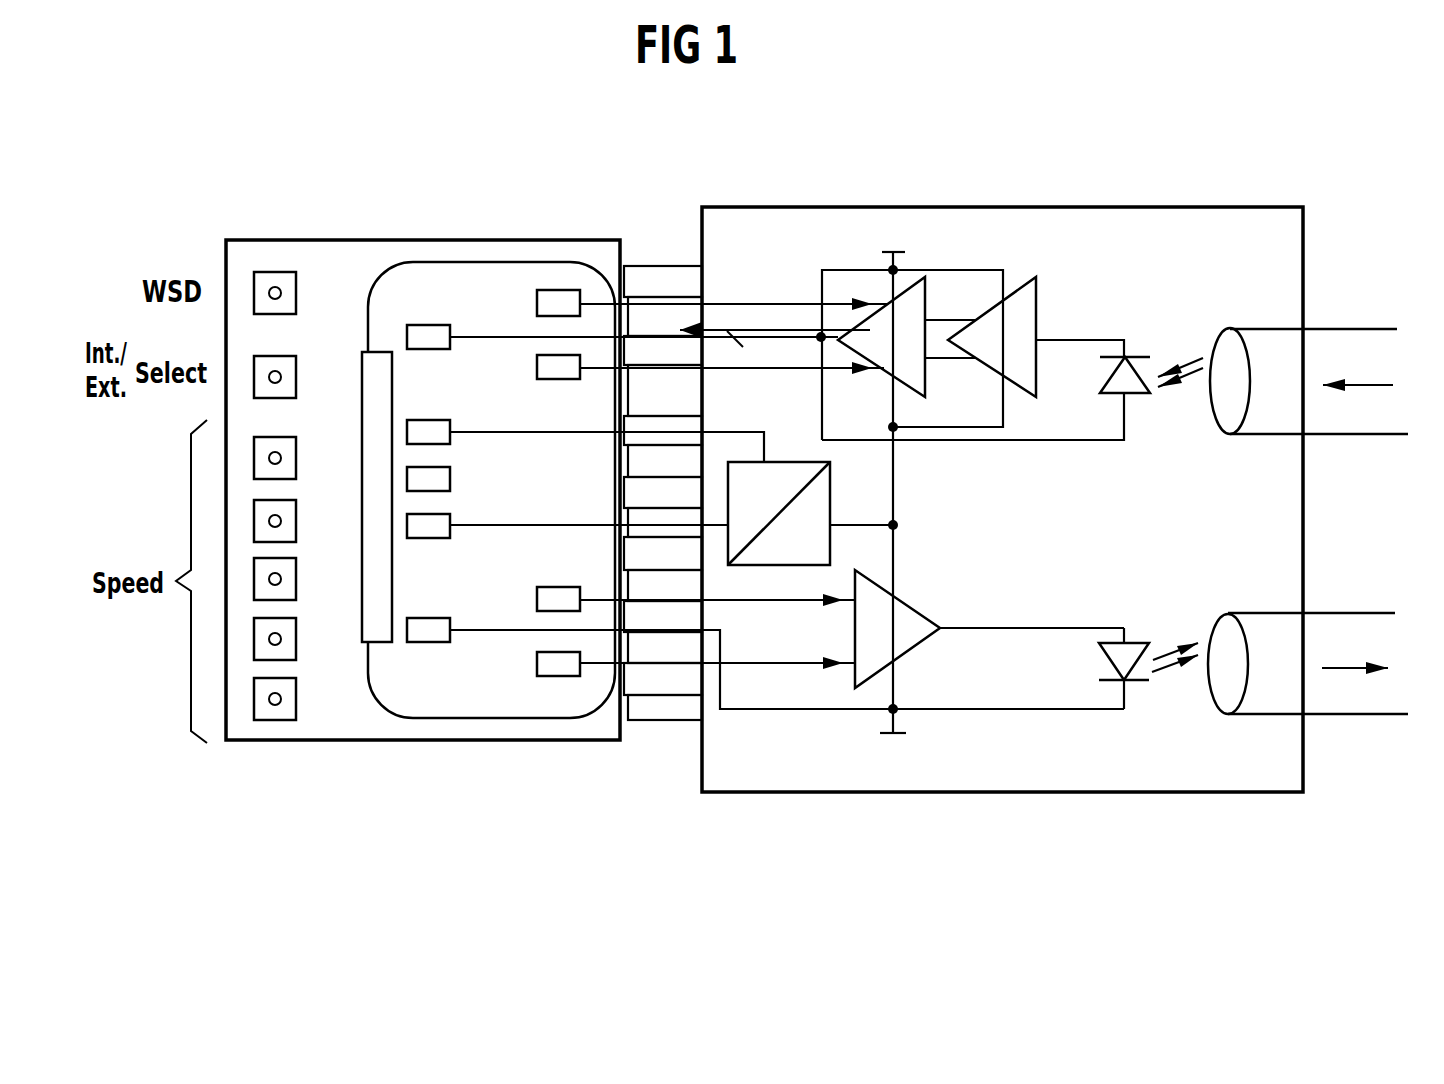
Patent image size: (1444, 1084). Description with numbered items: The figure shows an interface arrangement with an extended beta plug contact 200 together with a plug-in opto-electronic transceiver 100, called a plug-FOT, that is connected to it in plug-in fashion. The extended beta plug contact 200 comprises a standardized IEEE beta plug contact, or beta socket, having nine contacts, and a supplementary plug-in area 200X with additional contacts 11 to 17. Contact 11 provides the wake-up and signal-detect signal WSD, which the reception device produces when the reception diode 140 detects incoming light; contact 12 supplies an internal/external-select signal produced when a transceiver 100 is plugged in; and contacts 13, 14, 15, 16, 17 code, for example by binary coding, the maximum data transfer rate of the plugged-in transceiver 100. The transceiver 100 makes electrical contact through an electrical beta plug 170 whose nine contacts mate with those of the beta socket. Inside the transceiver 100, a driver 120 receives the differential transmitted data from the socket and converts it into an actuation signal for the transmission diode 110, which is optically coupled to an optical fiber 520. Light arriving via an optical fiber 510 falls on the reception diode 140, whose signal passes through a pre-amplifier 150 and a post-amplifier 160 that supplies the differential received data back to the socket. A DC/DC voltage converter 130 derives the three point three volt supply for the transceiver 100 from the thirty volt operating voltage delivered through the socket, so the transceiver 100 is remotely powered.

The contact 11 is at (288, 305).
The contact 12 is at (287, 388).
The contact 13 is at (284, 467).
The contact 14 is at (285, 531).
The contact 15 is at (284, 588).
The contact 16 is at (280, 650).
The contact 17 is at (295, 696).
The plug-in opto-electronic transceiver 100 is at (1040, 792).
The transmission diode 110 is at (1130, 652).
The driver 120 is at (893, 637).
The DC/DC voltage converter 130 is at (815, 517).
The reception diode 140 is at (1133, 387).
The pre-amplifier 150 is at (1025, 322).
The post-amplifier 160 is at (905, 322).
The 1394b beta plug 170 is at (680, 705).
The extended beta plug contact 200 is at (332, 238).
The supplementary plug-in area 200X is at (300, 559).
The optical fiber 510 is at (1347, 415).
The optical fiber 520 is at (1353, 695).